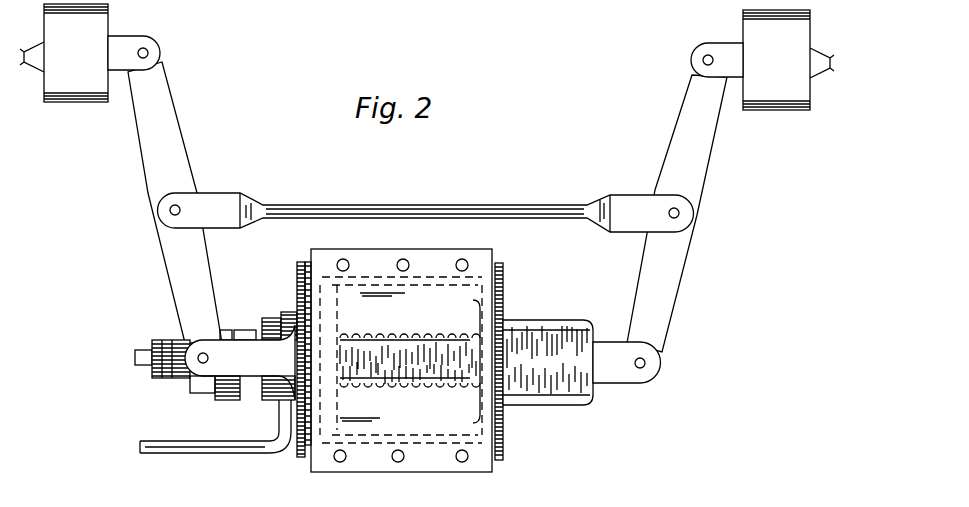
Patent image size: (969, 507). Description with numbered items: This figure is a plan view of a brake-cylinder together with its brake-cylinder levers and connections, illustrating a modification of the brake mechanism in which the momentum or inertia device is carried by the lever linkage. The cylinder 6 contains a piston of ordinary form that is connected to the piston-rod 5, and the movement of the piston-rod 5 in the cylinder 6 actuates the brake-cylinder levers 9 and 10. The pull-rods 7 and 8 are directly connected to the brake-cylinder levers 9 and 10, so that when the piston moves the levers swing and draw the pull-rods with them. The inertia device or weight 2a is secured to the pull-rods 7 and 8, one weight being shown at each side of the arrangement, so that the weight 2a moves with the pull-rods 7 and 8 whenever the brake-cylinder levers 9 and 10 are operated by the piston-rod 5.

The inertia device or weight 2a is at (427, 57).
The piston-rod 5 is at (609, 379).
The cylinder 6 is at (364, 360).
The pull-rod 7 is at (721, 47).
The pull-rod 8 is at (123, 36).
The brake-cylinder lever 9 is at (674, 137).
The brake-cylinder lever 10 is at (177, 137).